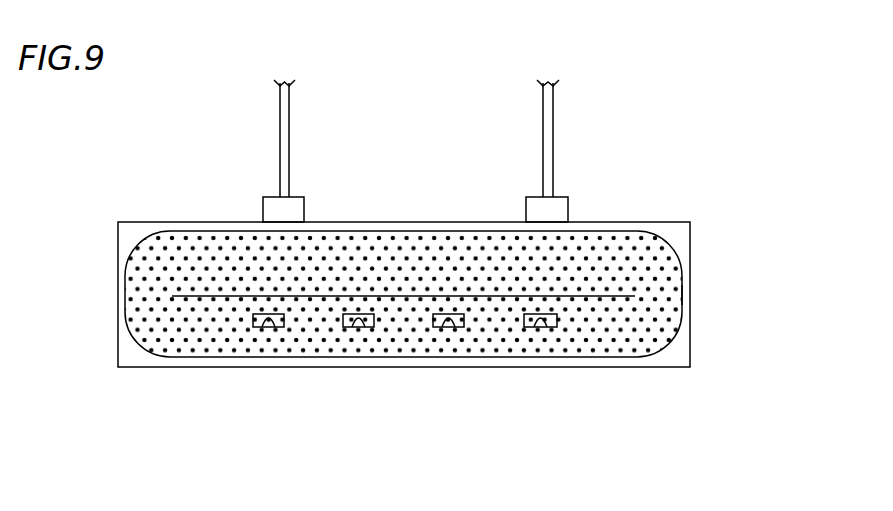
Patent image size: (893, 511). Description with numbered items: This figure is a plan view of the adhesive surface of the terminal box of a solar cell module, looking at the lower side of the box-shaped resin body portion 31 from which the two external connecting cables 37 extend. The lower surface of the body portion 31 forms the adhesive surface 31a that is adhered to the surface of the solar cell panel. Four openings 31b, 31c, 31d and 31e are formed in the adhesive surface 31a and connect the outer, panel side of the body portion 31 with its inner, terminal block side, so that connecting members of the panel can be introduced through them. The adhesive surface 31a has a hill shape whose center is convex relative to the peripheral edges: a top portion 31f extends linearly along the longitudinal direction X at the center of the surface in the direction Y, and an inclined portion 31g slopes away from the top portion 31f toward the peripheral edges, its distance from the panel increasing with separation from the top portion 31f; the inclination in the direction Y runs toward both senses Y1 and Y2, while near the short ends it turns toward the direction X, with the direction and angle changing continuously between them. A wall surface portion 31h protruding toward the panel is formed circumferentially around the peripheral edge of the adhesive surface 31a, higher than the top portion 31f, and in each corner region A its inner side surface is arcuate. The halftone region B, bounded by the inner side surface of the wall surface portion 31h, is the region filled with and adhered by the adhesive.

The body portion 31 is at (197, 222).
The adhesive surface 31a is at (687, 148).
The opening 31b is at (370, 327).
The opening 31c is at (458, 327).
The opening 31d is at (280, 327).
The opening 31e is at (545, 327).
The top portion 31f is at (573, 296).
The inclined portion 31g is at (637, 245).
The wall surface portion 31h is at (686, 296).
The external connecting cable 37 is at (283, 110).
The region A is at (119, 209).
The region B is at (403, 252).
The direction X is at (463, 462).
The direction Y is at (748, 228).
The direction Y1 is at (786, 280).
The direction Y2 is at (786, 228).